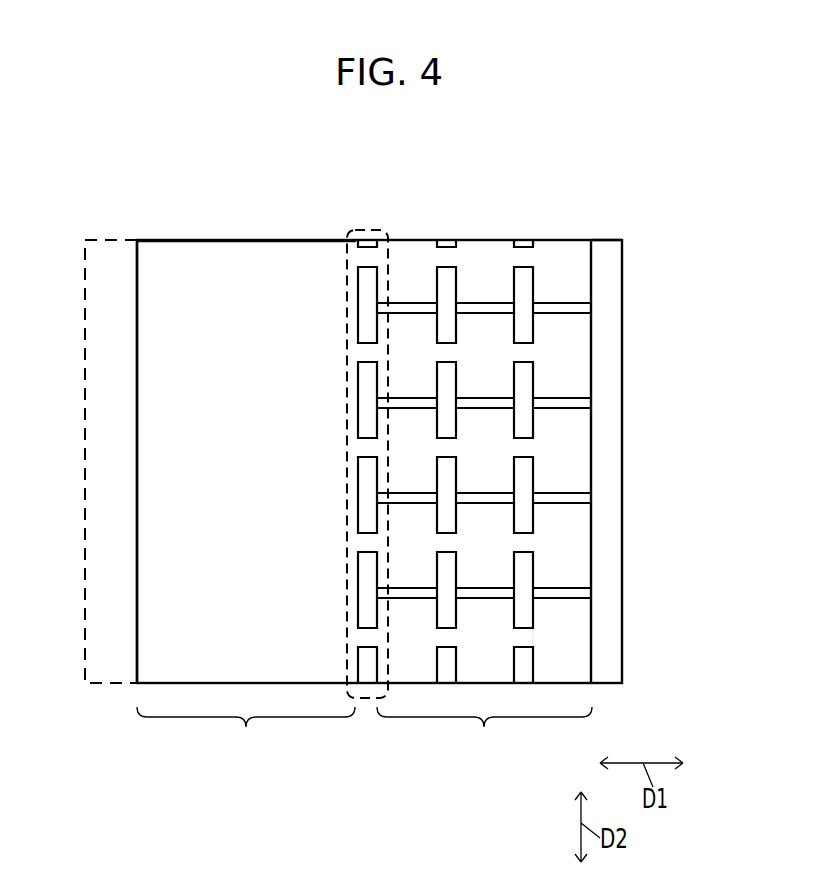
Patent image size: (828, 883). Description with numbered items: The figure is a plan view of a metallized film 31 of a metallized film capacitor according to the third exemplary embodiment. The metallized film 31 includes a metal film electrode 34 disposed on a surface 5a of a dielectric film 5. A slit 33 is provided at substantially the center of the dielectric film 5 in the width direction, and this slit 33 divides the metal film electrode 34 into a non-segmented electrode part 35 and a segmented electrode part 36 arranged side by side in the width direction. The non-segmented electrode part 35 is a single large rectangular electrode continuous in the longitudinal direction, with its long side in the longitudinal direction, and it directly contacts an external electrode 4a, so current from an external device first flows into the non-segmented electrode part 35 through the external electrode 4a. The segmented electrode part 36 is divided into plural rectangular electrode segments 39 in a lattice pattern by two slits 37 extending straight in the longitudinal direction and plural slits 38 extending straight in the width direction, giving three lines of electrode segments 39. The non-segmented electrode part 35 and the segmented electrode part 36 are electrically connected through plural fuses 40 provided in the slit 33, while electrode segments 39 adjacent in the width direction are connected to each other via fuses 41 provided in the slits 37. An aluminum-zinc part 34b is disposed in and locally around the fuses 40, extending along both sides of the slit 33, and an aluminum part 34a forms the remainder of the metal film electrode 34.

The metallized film 31 is at (638, 238).
The dielectric film 5 is at (612, 284).
The surface 5a is at (610, 255).
The external electrode 4a is at (113, 240).
The metal film electrode 34 is at (183, 357).
The aluminum part 34a is at (190, 280).
The aluminum-zinc part 34b is at (345, 657).
The slit 33 is at (368, 278).
The slits 37 is at (520, 281).
The fuses 41 is at (525, 362).
The electrode segments 39 is at (560, 376).
The slits 38 is at (570, 503).
The fuses 40 is at (366, 545).
The non-segmented electrode part 35 is at (246, 735).
The segmented electrode part 36 is at (484, 735).